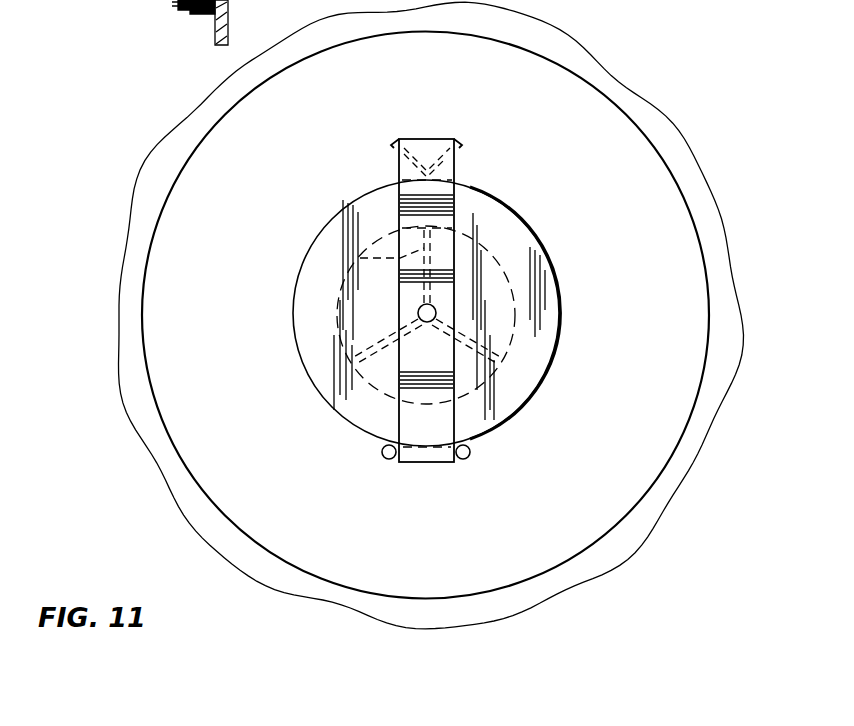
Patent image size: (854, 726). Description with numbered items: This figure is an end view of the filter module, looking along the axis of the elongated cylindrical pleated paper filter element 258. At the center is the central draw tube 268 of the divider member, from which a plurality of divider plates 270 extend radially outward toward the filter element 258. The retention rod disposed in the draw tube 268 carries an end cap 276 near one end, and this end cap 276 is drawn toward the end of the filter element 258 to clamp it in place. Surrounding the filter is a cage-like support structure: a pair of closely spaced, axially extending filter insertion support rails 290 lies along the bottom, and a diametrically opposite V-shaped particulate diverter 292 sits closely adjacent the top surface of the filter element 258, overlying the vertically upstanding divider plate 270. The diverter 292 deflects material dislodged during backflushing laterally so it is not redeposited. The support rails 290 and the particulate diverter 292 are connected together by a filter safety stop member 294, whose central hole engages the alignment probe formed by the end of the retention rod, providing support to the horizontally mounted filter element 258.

The filter element 258 is at (540, 318).
The central draw tube 268 is at (432, 306).
The divider plates 270 is at (358, 257).
The end cap 276 is at (540, 378).
The filter insertion support rails 290 is at (387, 460).
The V-shaped particulate diverter 292 is at (456, 165).
The filter safety stop member 294 is at (455, 203).